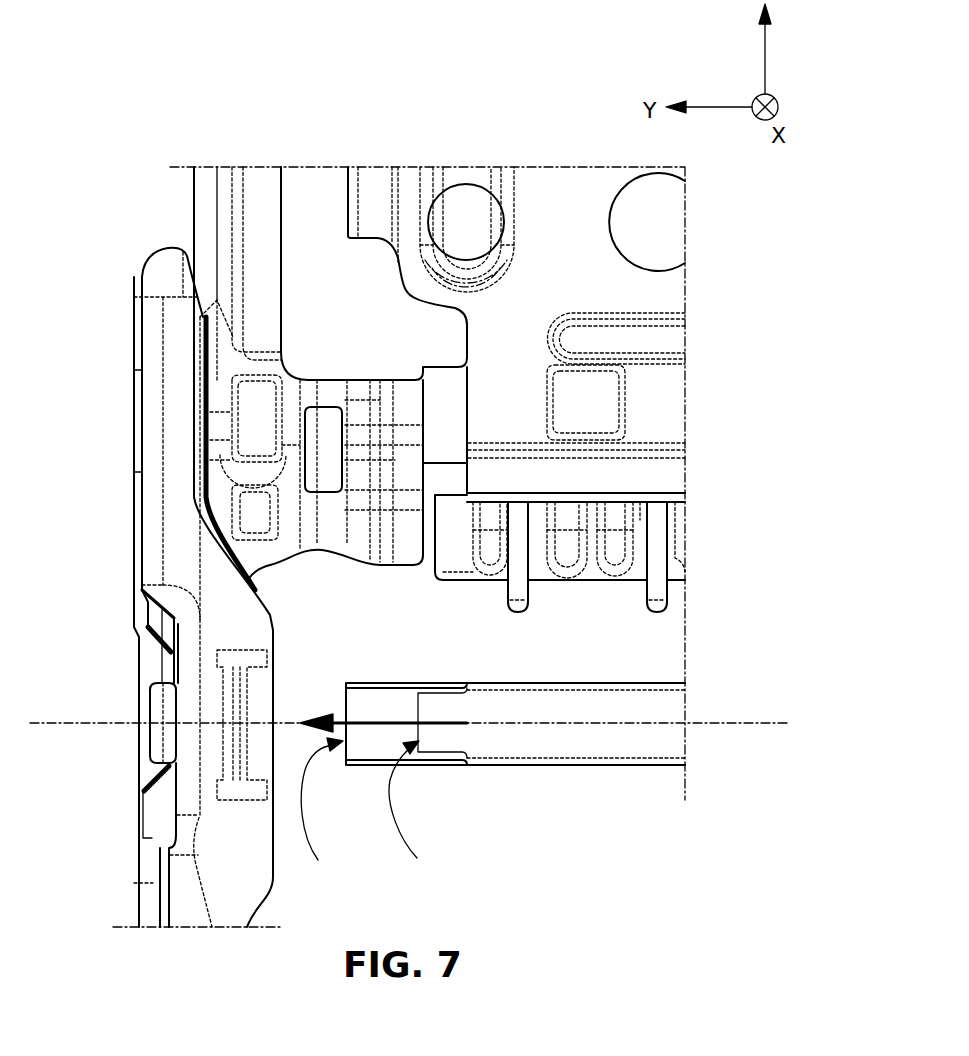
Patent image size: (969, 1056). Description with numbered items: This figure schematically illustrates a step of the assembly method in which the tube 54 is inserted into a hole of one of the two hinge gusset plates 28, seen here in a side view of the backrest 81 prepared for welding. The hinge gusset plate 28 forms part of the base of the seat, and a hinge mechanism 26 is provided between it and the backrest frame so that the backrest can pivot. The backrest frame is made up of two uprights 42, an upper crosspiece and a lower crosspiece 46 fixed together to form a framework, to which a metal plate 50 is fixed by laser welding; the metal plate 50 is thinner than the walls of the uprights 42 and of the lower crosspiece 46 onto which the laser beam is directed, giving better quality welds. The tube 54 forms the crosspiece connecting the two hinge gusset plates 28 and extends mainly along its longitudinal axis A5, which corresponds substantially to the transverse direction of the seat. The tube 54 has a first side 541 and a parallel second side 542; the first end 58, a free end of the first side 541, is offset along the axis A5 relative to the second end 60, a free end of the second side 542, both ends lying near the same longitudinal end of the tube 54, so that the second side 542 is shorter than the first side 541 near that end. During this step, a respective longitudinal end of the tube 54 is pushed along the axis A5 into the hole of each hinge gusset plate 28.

The backrest 81 is at (212, 140).
The upright 42 is at (205, 213).
The hinge gusset plate 28 is at (150, 412).
The hinge mechanism 26 is at (153, 661).
The metal plate 50 is at (675, 403).
The lower crosspiece 46 is at (635, 548).
The tube 54 is at (622, 768).
The first side of the tube 541 is at (372, 746).
The second side of the tube 542 is at (525, 742).
The first end 58 is at (322, 804).
The second end 60 is at (417, 813).
The longitudinal axis of the tube A5 is at (766, 718).